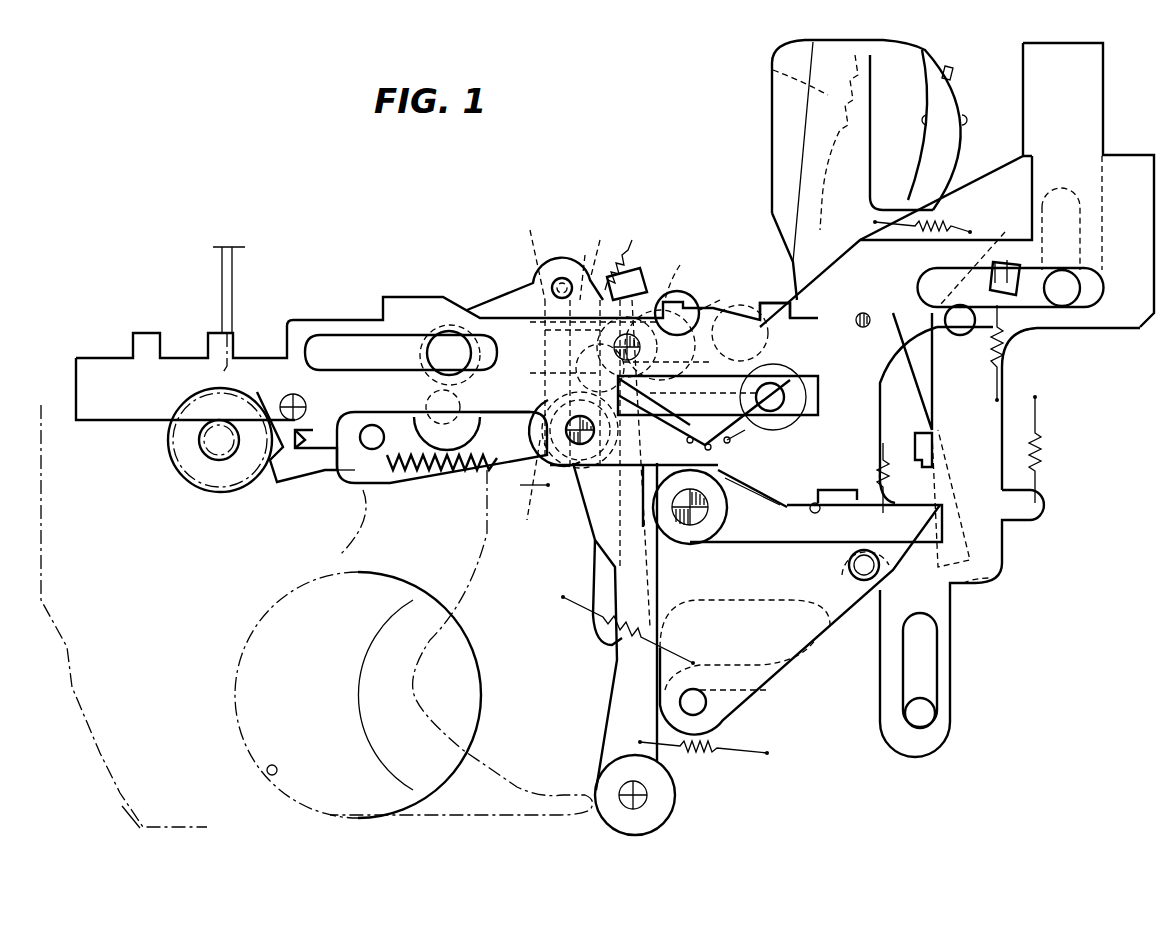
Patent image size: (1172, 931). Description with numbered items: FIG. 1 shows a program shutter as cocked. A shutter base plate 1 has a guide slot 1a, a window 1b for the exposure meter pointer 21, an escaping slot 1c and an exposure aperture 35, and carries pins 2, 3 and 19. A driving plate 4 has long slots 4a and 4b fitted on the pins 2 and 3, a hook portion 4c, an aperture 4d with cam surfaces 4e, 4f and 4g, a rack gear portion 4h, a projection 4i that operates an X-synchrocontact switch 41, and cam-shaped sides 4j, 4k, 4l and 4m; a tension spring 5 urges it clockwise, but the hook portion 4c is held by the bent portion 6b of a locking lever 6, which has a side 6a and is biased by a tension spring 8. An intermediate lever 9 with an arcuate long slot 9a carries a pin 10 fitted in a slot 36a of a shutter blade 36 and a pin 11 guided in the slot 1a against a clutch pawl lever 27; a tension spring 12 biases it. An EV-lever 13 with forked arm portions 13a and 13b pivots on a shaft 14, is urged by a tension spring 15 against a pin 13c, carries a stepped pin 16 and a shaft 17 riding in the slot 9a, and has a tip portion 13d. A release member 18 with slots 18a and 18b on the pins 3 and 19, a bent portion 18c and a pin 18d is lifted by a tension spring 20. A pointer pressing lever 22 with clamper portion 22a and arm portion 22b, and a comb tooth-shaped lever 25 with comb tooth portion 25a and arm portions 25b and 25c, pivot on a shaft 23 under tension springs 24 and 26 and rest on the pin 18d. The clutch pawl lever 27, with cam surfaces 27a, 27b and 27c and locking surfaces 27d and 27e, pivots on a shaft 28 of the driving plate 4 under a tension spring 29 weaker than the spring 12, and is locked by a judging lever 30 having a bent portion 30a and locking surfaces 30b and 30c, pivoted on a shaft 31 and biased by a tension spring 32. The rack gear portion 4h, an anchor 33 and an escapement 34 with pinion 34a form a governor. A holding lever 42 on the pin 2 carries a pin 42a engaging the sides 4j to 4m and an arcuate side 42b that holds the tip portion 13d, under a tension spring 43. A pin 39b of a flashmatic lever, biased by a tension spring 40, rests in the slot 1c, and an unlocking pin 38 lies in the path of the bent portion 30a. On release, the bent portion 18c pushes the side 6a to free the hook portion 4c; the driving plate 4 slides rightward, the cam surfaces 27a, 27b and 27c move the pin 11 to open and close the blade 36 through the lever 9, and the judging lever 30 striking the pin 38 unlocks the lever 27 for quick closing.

The shutter base plate 1 is at (128, 820).
The guide slot 1a is at (704, 411).
The window 1b is at (966, 122).
The escaping slot 1c is at (765, 695).
The pin 2 is at (450, 332).
The pin 3 is at (1075, 290).
The driving plate 4 is at (393, 300).
The long slot 4a is at (336, 340).
The long slot 4b is at (1040, 332).
The hook portion 4c is at (813, 505).
The aperture 4d is at (698, 355).
The cam surface 4e is at (735, 435).
The cam surface 4f is at (716, 507).
The cam surface 4g is at (680, 445).
The rack gear portion 4h is at (118, 422).
The projection 4i is at (146, 338).
The cam-shaped side 4j is at (667, 300).
The cam-shaped side 4k is at (535, 283).
The cam-shaped side 4l is at (500, 317).
The cam-shaped side 4m is at (468, 302).
The tension spring 5 is at (523, 492).
The locking lever 6 is at (940, 522).
The side 6a is at (935, 500).
The bent portion 6b is at (832, 495).
The tension spring 8 is at (880, 456).
The intermediate lever 9 is at (427, 480).
The arcuate long slot 9a is at (500, 425).
The pin 10 is at (345, 486).
The pin 11 is at (785, 398).
The tension spring 12 is at (770, 303).
The EV-lever 13 is at (602, 660).
The arm portion 13a is at (838, 615).
The arm portion 13b is at (596, 564).
The pin 13c is at (745, 645).
The tip portion 13d is at (731, 293).
The shaft 14 is at (650, 795).
The tension spring 15 is at (740, 754).
The stepped pin 16 is at (880, 566).
The shaft 17 is at (588, 430).
The release member 18 is at (1103, 63).
The slot 18a is at (1082, 212).
The slot 18b is at (940, 640).
The bent portion 18c is at (928, 458).
The pin 18d is at (961, 335).
The pin 19 is at (935, 713).
The tension spring 20 is at (1038, 410).
The pointer of exposure meter 21 is at (953, 73).
The pointer pressing lever 22 is at (895, 155).
The clamper portion 22a is at (925, 118).
The arm portion 22b is at (950, 285).
The shaft 23 is at (860, 312).
The tension spring 24 is at (960, 230).
The comb tooth-shaped lever 25 is at (772, 70).
The comb tooth portion 25a is at (816, 140).
The arm portion 25b is at (986, 260).
The arm portion 25c is at (990, 578).
The tension spring 26 is at (1000, 380).
The clutch pawl lever 27 is at (685, 271).
The cam surface 27a is at (790, 375).
The cam surface 27b is at (718, 380).
The cam surface 27c is at (705, 389).
The locking surface 27d is at (531, 251).
The locking surface 27e is at (585, 265).
The shaft 28 is at (634, 271).
The tension spring 29 is at (632, 240).
The judging lever 30 is at (562, 463).
The bent portion 30a is at (546, 330).
The locking surface 30b is at (545, 297).
The locking surface 30c is at (525, 384).
The shaft 31 is at (614, 435).
The tension spring 32 is at (527, 491).
The anchor 33 is at (283, 476).
The escapement 34 is at (188, 455).
The pinion 34a is at (218, 445).
The exposure aperture 35 is at (270, 774).
The shutter blade 36 is at (490, 778).
The slot 36a is at (375, 450).
The unlocking pin 38 is at (685, 295).
The pin 39b is at (707, 705).
The tension spring 40 is at (562, 600).
The X-synchrocontact switch 41 is at (235, 292).
The holding lever 42 is at (425, 340).
The pin 42a is at (562, 278).
The arcuate side 42b is at (622, 287).
The tension spring 43 is at (549, 488).